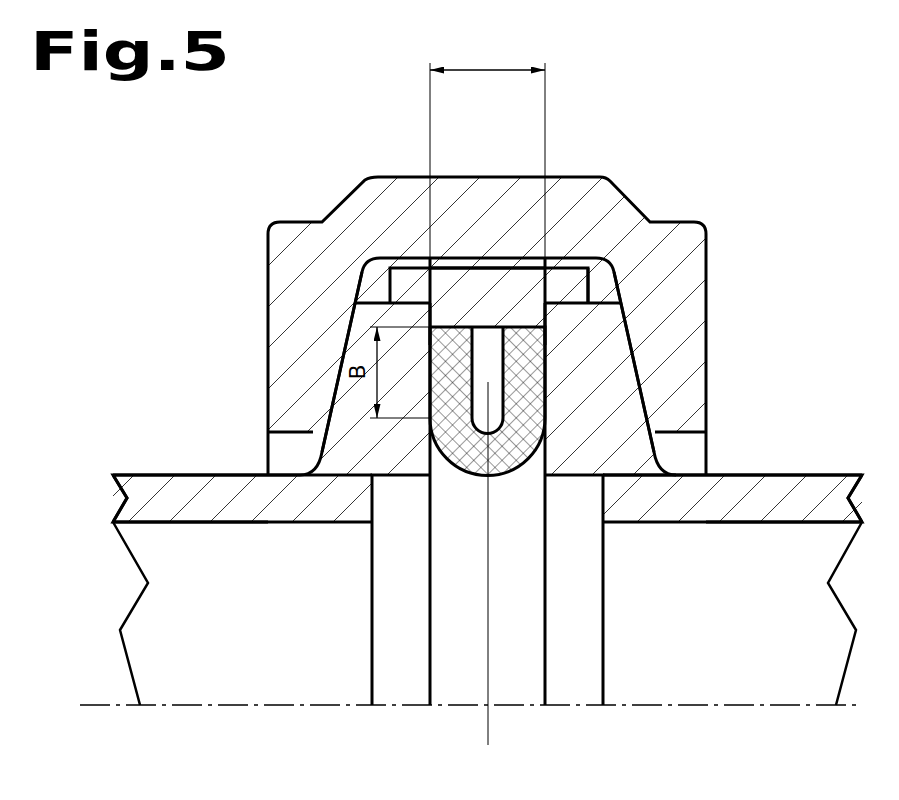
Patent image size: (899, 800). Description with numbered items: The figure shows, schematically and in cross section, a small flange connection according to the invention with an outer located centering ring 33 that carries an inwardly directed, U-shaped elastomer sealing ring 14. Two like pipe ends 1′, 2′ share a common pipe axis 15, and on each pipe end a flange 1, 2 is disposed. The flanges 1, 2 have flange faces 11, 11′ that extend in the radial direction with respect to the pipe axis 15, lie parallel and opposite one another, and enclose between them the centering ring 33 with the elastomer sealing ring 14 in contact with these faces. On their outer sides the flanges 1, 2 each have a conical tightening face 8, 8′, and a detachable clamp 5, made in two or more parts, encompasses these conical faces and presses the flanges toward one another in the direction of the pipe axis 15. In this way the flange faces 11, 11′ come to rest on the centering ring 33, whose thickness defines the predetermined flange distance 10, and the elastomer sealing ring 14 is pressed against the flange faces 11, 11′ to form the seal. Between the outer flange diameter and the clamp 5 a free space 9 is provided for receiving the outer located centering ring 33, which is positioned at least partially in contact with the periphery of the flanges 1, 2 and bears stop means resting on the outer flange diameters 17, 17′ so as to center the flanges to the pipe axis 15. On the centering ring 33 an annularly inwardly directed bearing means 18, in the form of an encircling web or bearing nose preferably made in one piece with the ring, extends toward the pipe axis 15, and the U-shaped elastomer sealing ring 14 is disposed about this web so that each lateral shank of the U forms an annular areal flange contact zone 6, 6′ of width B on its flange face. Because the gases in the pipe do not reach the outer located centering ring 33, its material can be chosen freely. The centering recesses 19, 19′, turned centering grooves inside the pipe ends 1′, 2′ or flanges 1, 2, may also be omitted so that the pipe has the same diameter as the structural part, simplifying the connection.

The flange 1 is at (250, 550).
The pipe end 1′ is at (181, 474).
The flange 2 is at (730, 546).
The pipe end 2′ is at (784, 468).
The clamp 5 is at (487, 274).
The flange contact zone 6 is at (302, 481).
The flange contact zone 6′ is at (681, 481).
The conical tightening face 8 is at (268, 362).
The conical tightening face 8′ is at (715, 354).
The free space 9 is at (472, 286).
The flange distance 10 is at (441, 141).
The flange face 11 is at (299, 297).
The flange face 11′ is at (688, 279).
The elastomer sealing ring 14 is at (623, 395).
The pipe axis 15 is at (470, 672).
The outer flange diameter 17 is at (415, 228).
The outer flange diameter 17′ is at (685, 229).
The bearing means 18 is at (464, 569).
The centering recess 19 is at (352, 590).
The centering recess 19′ is at (635, 590).
The centering ring 33 is at (487, 218).